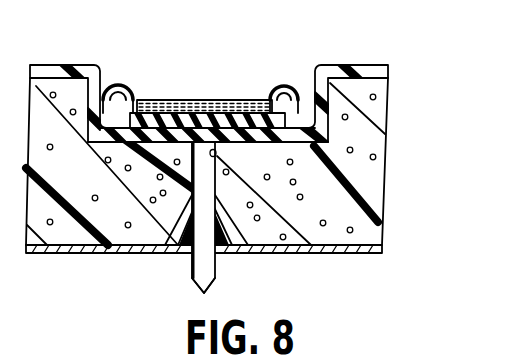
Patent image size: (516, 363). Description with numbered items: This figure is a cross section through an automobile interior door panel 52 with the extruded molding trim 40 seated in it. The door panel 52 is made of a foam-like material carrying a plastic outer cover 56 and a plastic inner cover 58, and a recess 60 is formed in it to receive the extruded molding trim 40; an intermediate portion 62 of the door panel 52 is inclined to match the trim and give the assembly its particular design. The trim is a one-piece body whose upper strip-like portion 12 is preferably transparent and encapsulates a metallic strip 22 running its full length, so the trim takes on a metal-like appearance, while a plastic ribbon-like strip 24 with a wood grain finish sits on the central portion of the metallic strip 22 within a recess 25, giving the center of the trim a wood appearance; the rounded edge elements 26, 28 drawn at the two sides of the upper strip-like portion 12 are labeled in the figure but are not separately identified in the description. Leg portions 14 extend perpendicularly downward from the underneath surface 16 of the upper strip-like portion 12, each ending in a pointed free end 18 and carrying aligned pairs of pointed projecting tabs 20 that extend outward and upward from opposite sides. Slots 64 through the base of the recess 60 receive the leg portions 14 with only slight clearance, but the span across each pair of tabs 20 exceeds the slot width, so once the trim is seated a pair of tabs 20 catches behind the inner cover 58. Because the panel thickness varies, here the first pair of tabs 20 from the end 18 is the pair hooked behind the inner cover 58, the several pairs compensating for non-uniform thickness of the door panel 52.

The upper strip-like portion 12 is at (187, 100).
The leg portion 14 is at (212, 279).
The underneath surface 16 is at (126, 143).
The pointed free end 18 is at (197, 289).
The pointed projecting tabs 20 is at (172, 258).
The metallic strip 22 is at (147, 99).
The plastic ribbon-like strip 24 is at (253, 101).
The recess 25 is at (233, 83).
The left rolled bead 26 is at (108, 100).
The right rolled bead 28 is at (296, 75).
The extruded molding trim 40 is at (252, 93).
The door panel 52 is at (399, 84).
The plastic outer cover 56 is at (43, 65).
The plastic inner cover 58 is at (50, 254).
The recess 60 is at (100, 80).
The intermediate portion 62 is at (350, 82).
The slots 64 is at (217, 154).